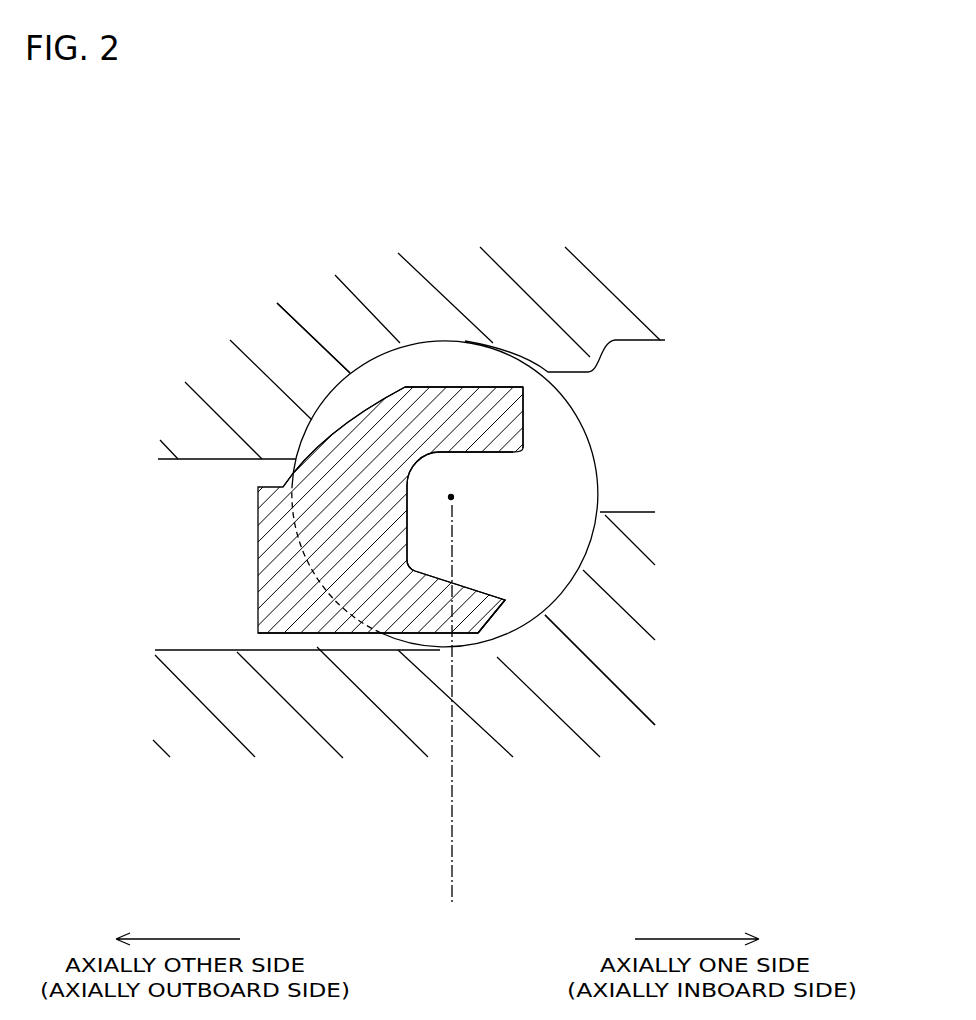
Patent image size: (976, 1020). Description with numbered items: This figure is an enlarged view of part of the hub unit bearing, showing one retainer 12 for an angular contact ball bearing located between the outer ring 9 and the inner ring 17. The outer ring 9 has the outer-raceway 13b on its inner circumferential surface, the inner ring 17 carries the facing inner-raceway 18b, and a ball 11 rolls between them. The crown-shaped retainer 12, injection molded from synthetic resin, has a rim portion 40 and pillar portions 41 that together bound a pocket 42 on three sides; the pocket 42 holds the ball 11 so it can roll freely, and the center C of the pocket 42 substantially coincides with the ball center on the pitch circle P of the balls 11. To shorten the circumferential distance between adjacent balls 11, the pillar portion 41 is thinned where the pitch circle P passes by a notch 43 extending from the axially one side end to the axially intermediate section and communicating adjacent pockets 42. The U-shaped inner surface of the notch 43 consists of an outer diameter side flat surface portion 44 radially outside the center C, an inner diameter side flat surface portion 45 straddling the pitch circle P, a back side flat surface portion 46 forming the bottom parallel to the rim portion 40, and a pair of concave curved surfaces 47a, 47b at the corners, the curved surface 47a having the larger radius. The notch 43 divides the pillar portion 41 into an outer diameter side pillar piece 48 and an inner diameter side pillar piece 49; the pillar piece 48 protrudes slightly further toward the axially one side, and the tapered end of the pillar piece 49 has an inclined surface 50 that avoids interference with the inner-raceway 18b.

The outer ring 9 is at (450, 290).
The ball 11 is at (587, 453).
The retainer for an angular contact ball bearing 12 is at (258, 539).
The outer-raceway 13b is at (347, 378).
The inner ring 17 is at (578, 724).
The inner-raceway 18b is at (523, 610).
The rim portion 40 is at (258, 592).
The pillar portion 41 is at (490, 385).
The pocket 42 is at (322, 640).
The notch 43 is at (527, 448).
The outer diameter side flat surface portion 44 is at (490, 455).
The inner diameter side flat surface portion 45 is at (480, 585).
The back side flat surface portion 46 is at (407, 523).
The curved surface 47a is at (378, 445).
The curved surface 47b is at (397, 640).
The outer diameter side pillar piece 48 is at (400, 343).
The inner diameter side pillar piece 49 is at (436, 640).
The inclined surface 50 is at (503, 640).
The pitch circle P is at (453, 868).
The center C is at (461, 498).